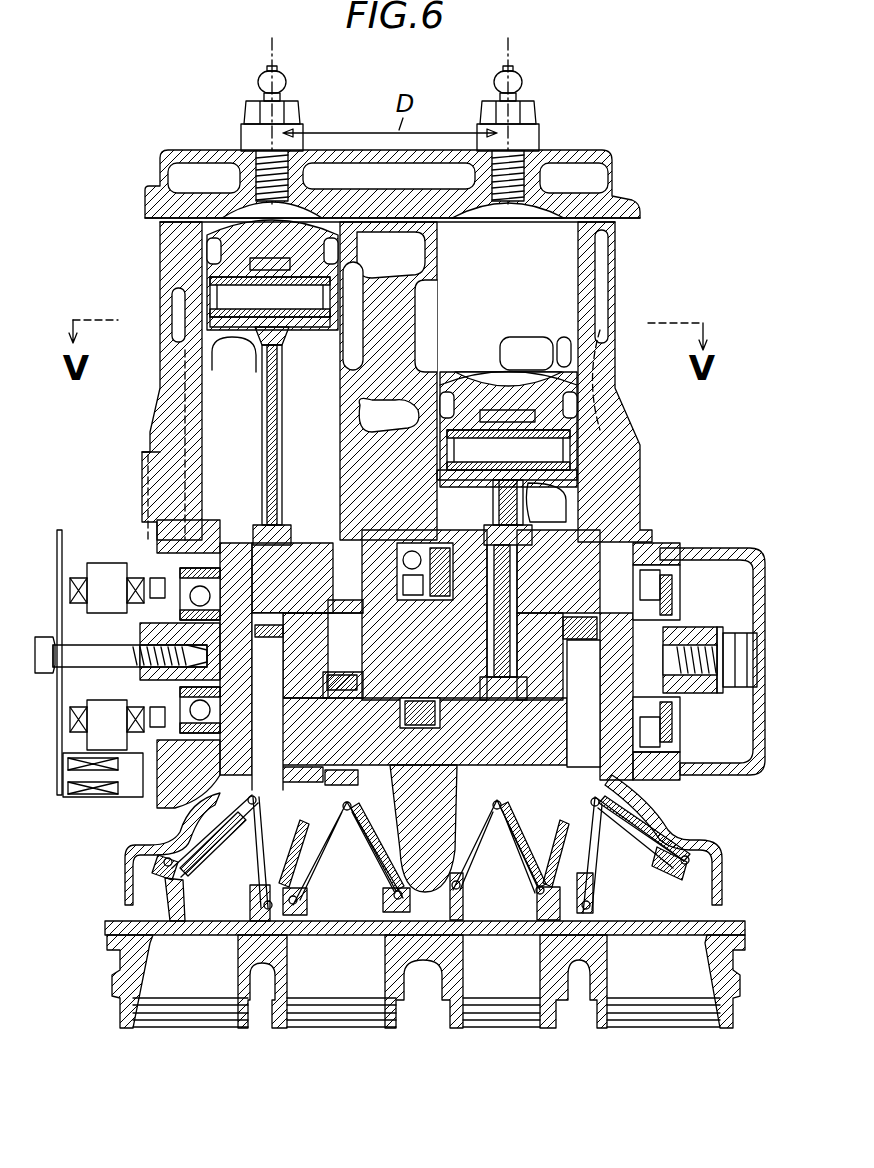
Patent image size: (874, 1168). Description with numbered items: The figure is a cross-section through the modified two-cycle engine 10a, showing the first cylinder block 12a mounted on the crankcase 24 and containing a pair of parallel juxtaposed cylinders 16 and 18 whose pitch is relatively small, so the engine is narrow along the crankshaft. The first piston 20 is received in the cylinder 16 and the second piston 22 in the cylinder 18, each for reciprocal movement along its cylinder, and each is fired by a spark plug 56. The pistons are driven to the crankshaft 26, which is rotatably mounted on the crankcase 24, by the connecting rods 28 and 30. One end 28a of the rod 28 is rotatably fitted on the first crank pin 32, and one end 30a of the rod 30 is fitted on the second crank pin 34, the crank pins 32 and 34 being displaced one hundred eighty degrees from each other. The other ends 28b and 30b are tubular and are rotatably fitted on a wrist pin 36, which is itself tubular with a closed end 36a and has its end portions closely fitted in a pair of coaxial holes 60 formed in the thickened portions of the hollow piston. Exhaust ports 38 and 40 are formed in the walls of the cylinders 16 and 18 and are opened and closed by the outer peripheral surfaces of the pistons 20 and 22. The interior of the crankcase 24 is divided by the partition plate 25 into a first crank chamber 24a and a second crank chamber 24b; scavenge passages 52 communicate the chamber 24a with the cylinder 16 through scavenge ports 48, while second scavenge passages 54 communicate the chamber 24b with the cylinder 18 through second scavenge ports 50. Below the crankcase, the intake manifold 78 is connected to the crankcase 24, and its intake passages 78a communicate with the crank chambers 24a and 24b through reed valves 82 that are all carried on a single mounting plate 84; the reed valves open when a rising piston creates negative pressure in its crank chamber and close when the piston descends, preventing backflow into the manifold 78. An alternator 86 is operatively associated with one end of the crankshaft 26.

The two-cycle engine 10a is at (654, 171).
The first cylinder block 12a is at (150, 217).
The first cylinder 16 is at (207, 385).
The second cylinder 18 is at (583, 264).
The first piston 20 is at (202, 320).
The second piston 22 is at (560, 400).
The crankcase 24 is at (680, 547).
The first crank chamber 24a is at (220, 795).
The second crank chamber 24b is at (622, 789).
The partition plate 25 is at (450, 780).
The crankshaft 26 is at (140, 635).
The first connecting rod 28 is at (263, 415).
The one end of first connecting rod 28a is at (272, 637).
The other end of first connecting rod 28b is at (286, 333).
The second connecting rod 30 is at (640, 483).
The one end of second connecting rod 30a is at (583, 640).
The other end of second connecting rod 30b is at (505, 520).
The first crank pin 32 is at (240, 537).
The second crank pin 34 is at (638, 502).
The wrist pin 36 is at (270, 308).
The closed end of wrist pin 36a is at (343, 280).
The exhaust port 38 is at (350, 376).
The exhaust port 40 is at (500, 308).
The scavenge port 48 is at (203, 352).
The second scavenge port 50 is at (577, 350).
The scavenge passage 52 is at (167, 440).
The second scavenge passage 54 is at (625, 400).
The spark plug 56 is at (297, 111).
The coaxial hole 60 is at (202, 287).
The intake manifold 78 is at (127, 978).
The intake passage 78a is at (183, 892).
The reed valve 82 is at (250, 852).
The mounting plate 84 is at (110, 928).
The alternator 86 is at (53, 777).